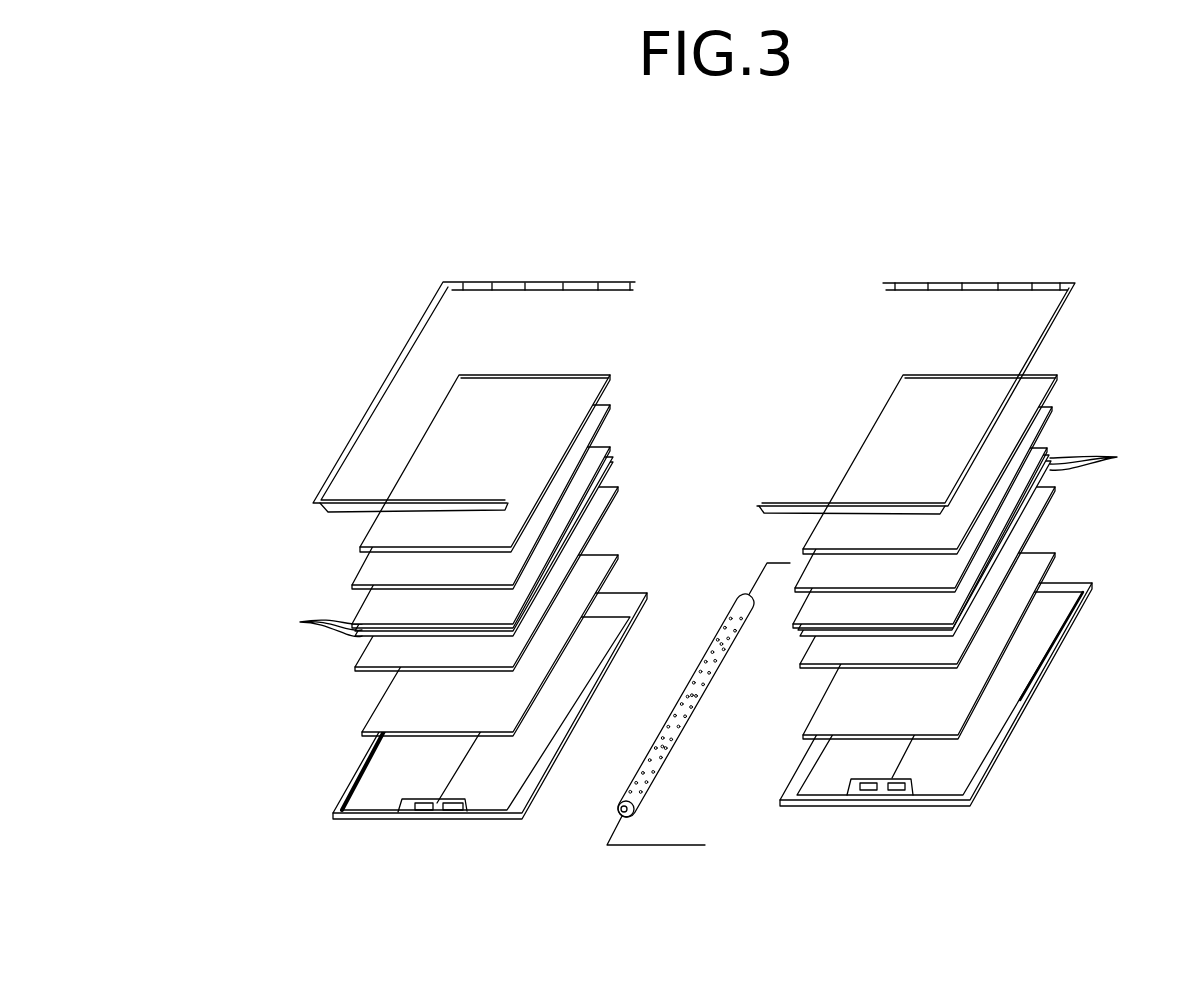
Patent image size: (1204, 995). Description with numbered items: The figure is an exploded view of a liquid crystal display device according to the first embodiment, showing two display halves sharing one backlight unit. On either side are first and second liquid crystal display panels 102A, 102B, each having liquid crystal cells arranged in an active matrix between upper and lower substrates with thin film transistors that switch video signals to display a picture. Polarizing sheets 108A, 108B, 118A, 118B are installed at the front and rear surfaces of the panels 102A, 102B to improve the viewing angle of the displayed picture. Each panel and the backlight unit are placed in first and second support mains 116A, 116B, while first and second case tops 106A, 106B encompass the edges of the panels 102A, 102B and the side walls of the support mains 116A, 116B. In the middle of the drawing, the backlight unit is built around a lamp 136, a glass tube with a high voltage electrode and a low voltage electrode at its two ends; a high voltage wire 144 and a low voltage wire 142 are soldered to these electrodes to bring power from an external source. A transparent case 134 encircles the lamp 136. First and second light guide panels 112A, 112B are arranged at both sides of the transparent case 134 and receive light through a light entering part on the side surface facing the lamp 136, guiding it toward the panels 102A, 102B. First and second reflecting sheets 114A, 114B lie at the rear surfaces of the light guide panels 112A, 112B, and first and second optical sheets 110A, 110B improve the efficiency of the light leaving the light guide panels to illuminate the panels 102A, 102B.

The first liquid crystal display panel 102A is at (360, 556).
The second liquid crystal display panel 102B is at (1052, 386).
The first case top 106A is at (435, 293).
The second case top 106B is at (1078, 298).
The polarizing sheet 108A is at (365, 538).
The polarizing sheet 108B is at (1053, 368).
The first optical sheets 110A is at (417, 549).
The second optical sheets 110B is at (993, 542).
The first light guide panel 112A is at (360, 660).
The second light guide panel 112B is at (1052, 509).
The first reflecting sheet 114A is at (375, 712).
The second reflecting sheet 114B is at (1047, 559).
The first support main 116A is at (358, 768).
The second support main 116B is at (1027, 690).
The polarizing sheet 118A is at (357, 581).
The polarizing sheet 118B is at (1050, 414).
The transparent case 134 is at (643, 808).
The lamp 136 is at (618, 811).
The low voltage wire 142 is at (678, 845).
The high voltage wire 144 is at (757, 582).